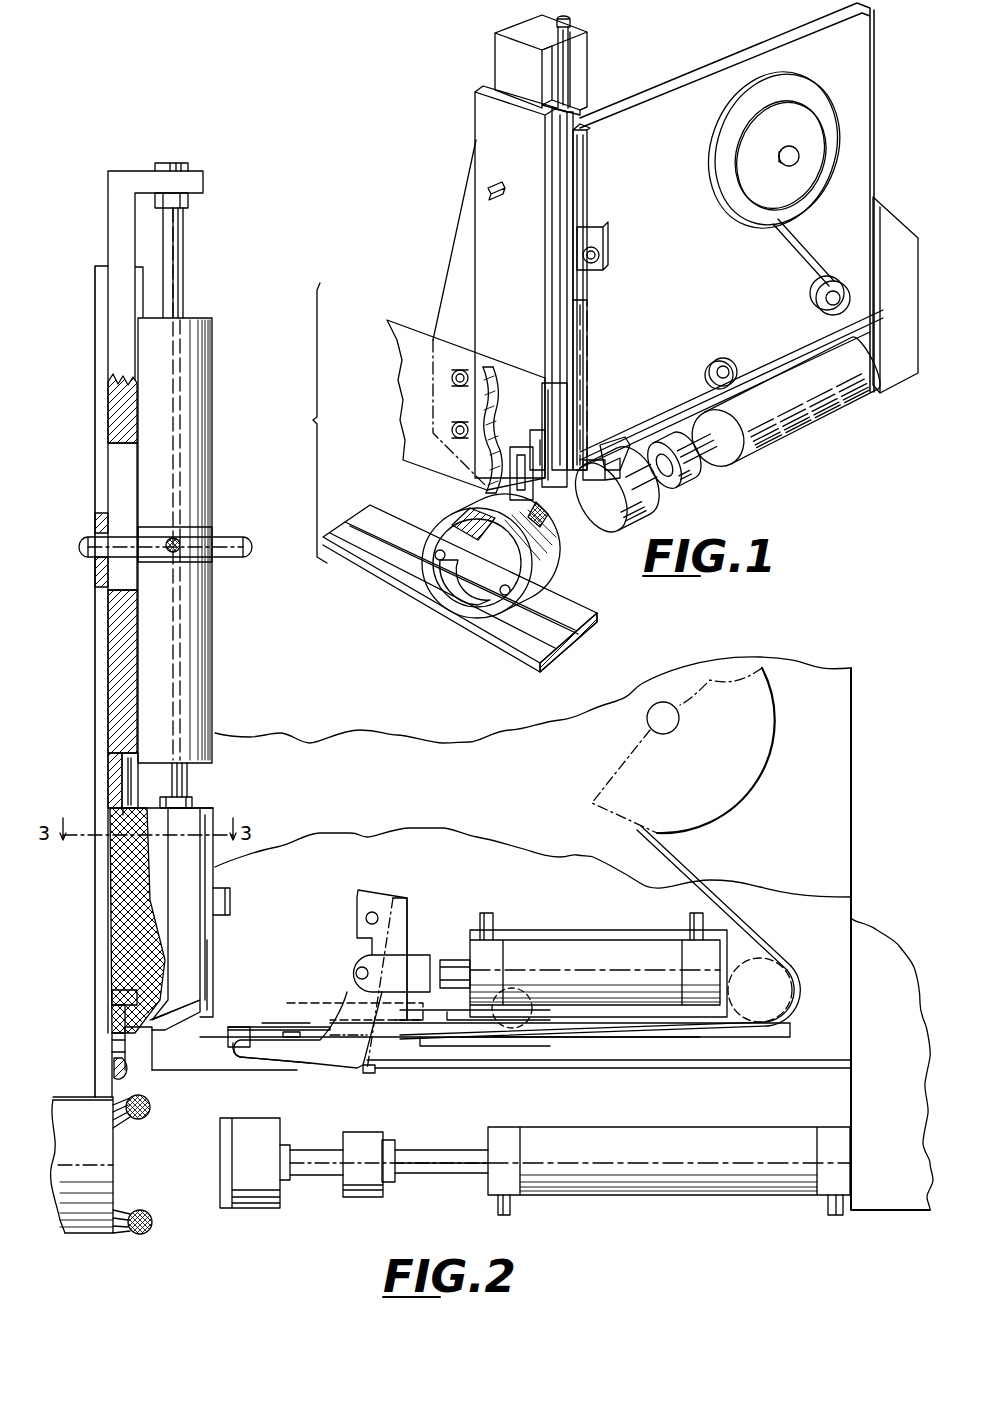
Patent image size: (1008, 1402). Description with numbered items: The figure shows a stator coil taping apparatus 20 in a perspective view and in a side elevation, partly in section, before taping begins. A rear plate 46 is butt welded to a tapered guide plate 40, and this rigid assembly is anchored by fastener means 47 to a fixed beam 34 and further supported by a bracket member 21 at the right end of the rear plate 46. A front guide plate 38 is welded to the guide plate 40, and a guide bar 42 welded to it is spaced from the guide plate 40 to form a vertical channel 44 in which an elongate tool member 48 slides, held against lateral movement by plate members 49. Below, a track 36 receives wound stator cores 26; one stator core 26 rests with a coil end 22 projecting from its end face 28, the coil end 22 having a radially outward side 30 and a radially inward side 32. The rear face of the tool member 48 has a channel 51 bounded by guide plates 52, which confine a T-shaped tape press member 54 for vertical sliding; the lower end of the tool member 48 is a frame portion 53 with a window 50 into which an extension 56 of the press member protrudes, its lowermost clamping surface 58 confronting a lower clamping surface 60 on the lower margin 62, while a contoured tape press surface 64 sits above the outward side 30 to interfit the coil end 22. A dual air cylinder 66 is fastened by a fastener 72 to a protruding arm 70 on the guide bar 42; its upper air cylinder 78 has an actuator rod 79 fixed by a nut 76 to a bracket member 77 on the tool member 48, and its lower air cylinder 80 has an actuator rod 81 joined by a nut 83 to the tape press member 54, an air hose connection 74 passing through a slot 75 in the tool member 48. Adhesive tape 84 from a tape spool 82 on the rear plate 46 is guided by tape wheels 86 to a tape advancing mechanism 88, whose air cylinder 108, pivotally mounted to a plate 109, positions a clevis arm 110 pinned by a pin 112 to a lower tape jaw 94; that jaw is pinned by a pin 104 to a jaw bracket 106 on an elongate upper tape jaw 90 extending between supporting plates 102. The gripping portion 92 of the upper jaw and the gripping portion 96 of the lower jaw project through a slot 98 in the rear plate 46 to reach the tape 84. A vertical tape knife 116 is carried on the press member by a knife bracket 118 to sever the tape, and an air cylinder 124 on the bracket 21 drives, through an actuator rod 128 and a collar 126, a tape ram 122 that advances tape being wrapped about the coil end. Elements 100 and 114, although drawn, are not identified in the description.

In FIG. 1, the taping apparatus 20 is at (408, 274).
In FIG. 2, the taping apparatus 20 is at (301, 721).
In FIG. 1, the bracket member 21 is at (905, 352).
In FIG. 1, the coil end 22 is at (553, 521).
In FIG. 2, the coil end 22 is at (158, 1111).
In FIG. 1, the stator core 26 is at (560, 572).
In FIG. 2, the stator core 26 is at (82, 1251).
In FIG. 2, the end face 28 is at (114, 1165).
In FIG. 2, the radially outward side 30 is at (148, 1098).
In FIG. 2, the radially inward side 32 is at (138, 1120).
In FIG. 1, the fixed beam 34 is at (408, 445).
In FIG. 2, the fixed beam 34 is at (97, 883).
In FIG. 1, the track 36 is at (368, 563).
In FIG. 1, the front guide plate 38 is at (480, 118).
In FIG. 2, the front guide plate 38 is at (97, 652).
In FIG. 1, the tapered guide plate 40 is at (456, 222).
In FIG. 1, the guide bar 42 is at (578, 203).
In FIG. 1, the channel 44 is at (503, 88).
In FIG. 1, the rear plate 46 is at (670, 117).
In FIG. 2, the rear plate 46 is at (851, 750).
In FIG. 1, the fastener means 47 is at (452, 430).
In FIG. 1, the tool member 48 is at (503, 53).
In FIG. 2, the tool member 48 is at (113, 265).
In FIG. 1, the plate members 49 is at (573, 115).
In FIG. 2, the plate members 49 is at (190, 772).
In FIG. 1, the window 50 is at (492, 482).
In FIG. 2, the window 50 is at (112, 1026).
In FIG. 2, the channel 51 is at (115, 760).
In FIG. 2, the guide plates 52 is at (115, 790).
In FIG. 1, the frame portion 53 is at (508, 470).
In FIG. 2, the tape press member 54 is at (190, 890).
In FIG. 2, the extension 56 is at (118, 992).
In FIG. 2, the lowermost clamping surface 58 is at (112, 997).
In FIG. 2, the lower clamping surface 60 is at (112, 1045).
In FIG. 2, the lower margin 62 is at (112, 1062).
In FIG. 2, the tape press surface 64 is at (140, 1048).
In FIG. 2, the dual air cylinder 66 is at (225, 526).
In FIG. 1, the protruding arm 70 is at (598, 230).
In FIG. 1, the fastener 72 is at (596, 252).
In FIG. 2, the fastener 72 is at (180, 550).
In FIG. 2, the air hose connection 74 is at (87, 548).
In FIG. 2, the slot 75 is at (120, 483).
In FIG. 2, the nut 76 is at (188, 205).
In FIG. 2, the bracket member 77 is at (208, 186).
In FIG. 1, the upper air cylinder 78 is at (590, 175).
In FIG. 2, the upper air cylinder 78 is at (212, 392).
In FIG. 1, the actuator rod 79 is at (578, 66).
In FIG. 2, the actuator rod 79 is at (183, 262).
In FIG. 1, the lower air cylinder 80 is at (583, 308).
In FIG. 2, the lower air cylinder 80 is at (212, 672).
In FIG. 2, the actuator rod 81 is at (193, 800).
In FIG. 1, the tape spool 82 is at (810, 78).
In FIG. 2, the tape spool 82 is at (742, 782).
In FIG. 2, the nut 83 is at (213, 808).
In FIG. 1, the adhesive tape 84 is at (790, 298).
In FIG. 2, the adhesive tape 84 is at (738, 935).
In FIG. 1, the tape wheels 86 is at (812, 305).
In FIG. 2, the tape wheels 86 is at (792, 995).
In FIG. 2, the tape advancing mechanism 88 is at (420, 906).
In FIG. 2, the upper tape jaw 90 is at (258, 1023).
In FIG. 1, the gripping portion 92 is at (598, 455).
In FIG. 2, the gripping portion 92 is at (236, 1027).
In FIG. 2, the lower tape jaw 94 is at (283, 1060).
In FIG. 2, the gripping portion 96 is at (240, 1047).
In FIG. 1, the slot 98 is at (622, 440).
In FIG. 1, the base plate 100 is at (560, 445).
In FIG. 2, the base plate 100 is at (218, 1043).
In FIG. 2, the supporting plates 102 is at (430, 1010).
In FIG. 2, the pin 104 is at (365, 920).
In FIG. 2, the jaw bracket 106 is at (400, 928).
In FIG. 2, the air cylinder 108 is at (575, 930).
In FIG. 2, the plate 109 is at (635, 928).
In FIG. 2, the clevis arm 110 is at (355, 960).
In FIG. 1, the pin 112 is at (632, 512).
In FIG. 2, the pin 112 is at (355, 973).
In FIG. 2, the belt end 114 is at (368, 1073).
In FIG. 2, the vertical tape knife 116 is at (202, 1015).
In FIG. 2, the knife bracket 118 is at (213, 937).
In FIG. 2, the tape ram 122 is at (243, 1208).
In FIG. 1, the air cylinder 124 is at (780, 428).
In FIG. 2, the air cylinder 124 is at (655, 1195).
In FIG. 2, the collar 126 is at (363, 1197).
In FIG. 2, the actuator rod 128 is at (427, 1173).